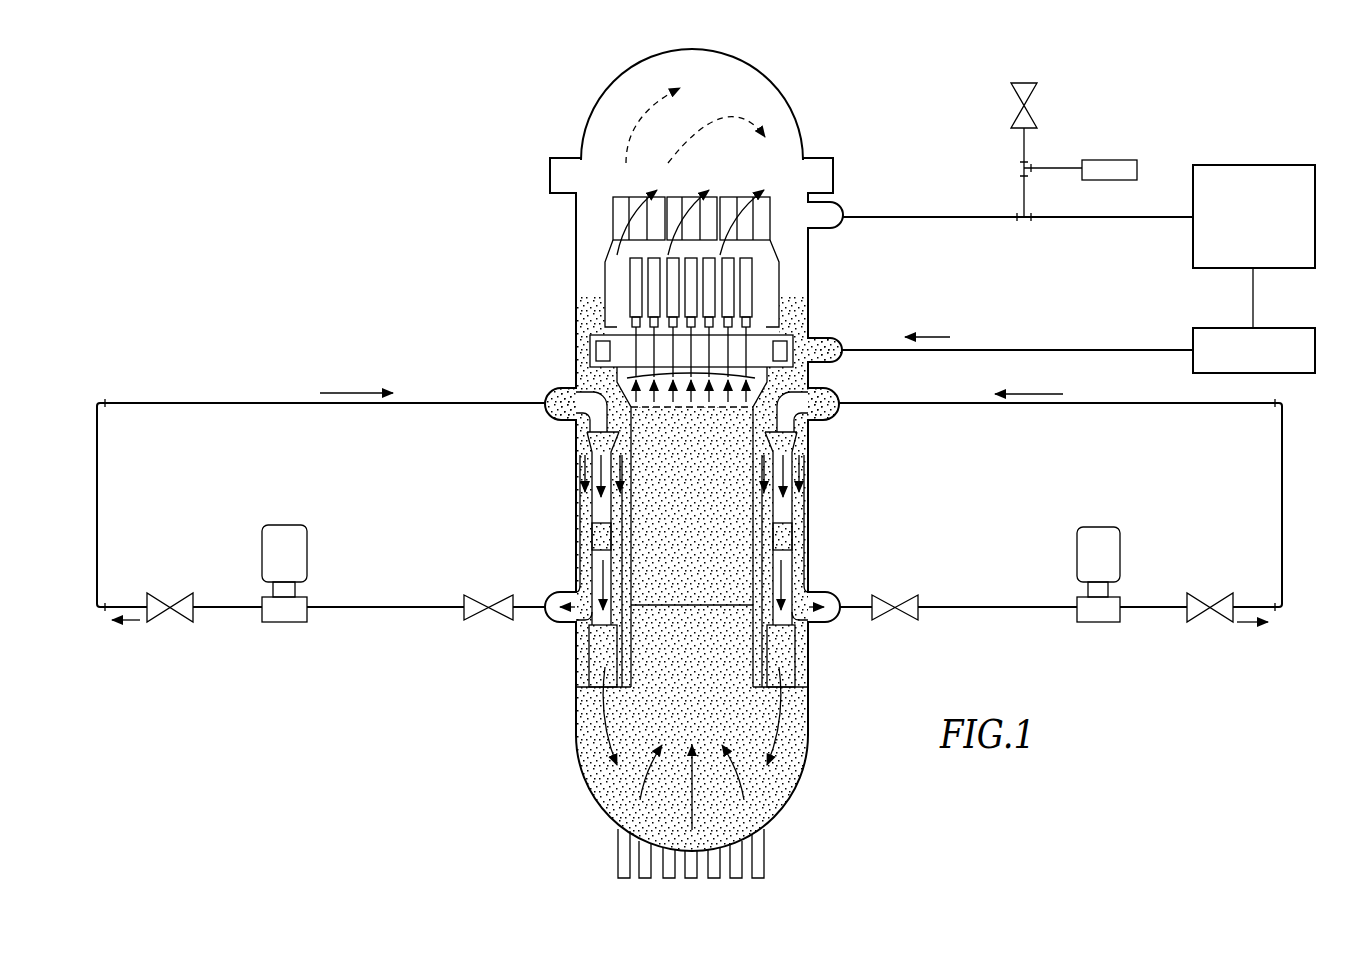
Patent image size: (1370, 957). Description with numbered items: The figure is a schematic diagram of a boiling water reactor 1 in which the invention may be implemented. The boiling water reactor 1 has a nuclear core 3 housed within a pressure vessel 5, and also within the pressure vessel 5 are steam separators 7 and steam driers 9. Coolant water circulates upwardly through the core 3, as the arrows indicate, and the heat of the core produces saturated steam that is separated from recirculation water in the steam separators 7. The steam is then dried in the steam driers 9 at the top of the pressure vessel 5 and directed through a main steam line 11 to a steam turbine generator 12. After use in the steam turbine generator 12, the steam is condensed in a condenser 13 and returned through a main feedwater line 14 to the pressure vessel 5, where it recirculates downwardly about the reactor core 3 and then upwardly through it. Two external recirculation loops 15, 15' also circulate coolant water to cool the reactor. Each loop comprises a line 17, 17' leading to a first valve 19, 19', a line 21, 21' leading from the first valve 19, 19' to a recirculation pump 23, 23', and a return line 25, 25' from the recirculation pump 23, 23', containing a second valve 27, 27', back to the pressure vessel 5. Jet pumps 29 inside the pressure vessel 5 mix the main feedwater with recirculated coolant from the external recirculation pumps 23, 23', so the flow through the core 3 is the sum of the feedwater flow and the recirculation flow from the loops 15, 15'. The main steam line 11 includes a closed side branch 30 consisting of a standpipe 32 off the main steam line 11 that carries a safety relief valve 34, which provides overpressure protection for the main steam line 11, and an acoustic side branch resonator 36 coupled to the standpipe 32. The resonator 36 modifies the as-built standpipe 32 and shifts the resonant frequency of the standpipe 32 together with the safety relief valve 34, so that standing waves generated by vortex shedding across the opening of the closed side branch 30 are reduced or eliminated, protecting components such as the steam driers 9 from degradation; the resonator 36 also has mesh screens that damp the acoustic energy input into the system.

The boiling water reactor 1 is at (543, 250).
The nuclear core 3 is at (718, 498).
The pressure vessel 5 is at (576, 500).
The steam separators 7 is at (622, 287).
The steam driers 9 is at (608, 223).
The main steam line 11 is at (872, 215).
The steam turbine generator 12 is at (1316, 192).
The condenser 13 is at (1316, 345).
The main feedwater line 14 is at (1070, 340).
The recirculation loop 15 is at (321, 505).
The recirculation loop 15' is at (1061, 505).
The line 17 is at (557, 582).
The line 17' is at (828, 582).
The first valve 19 is at (488, 580).
The first valve 19' is at (895, 586).
The line 21 is at (385, 578).
The line 21' is at (997, 580).
The recirculation pump 23 is at (288, 546).
The recirculation pump 23' is at (1094, 546).
The return line 25 is at (353, 481).
The return line 25' is at (1028, 496).
The second valve 27 is at (152, 584).
The second valve 27' is at (1227, 583).
The jet pumps 29 is at (575, 447).
The closed side branch 30 is at (997, 117).
The standpipe 32 is at (1022, 192).
The safety relief valve 34 is at (1036, 95).
The acoustic side branch resonator 36 is at (1108, 160).